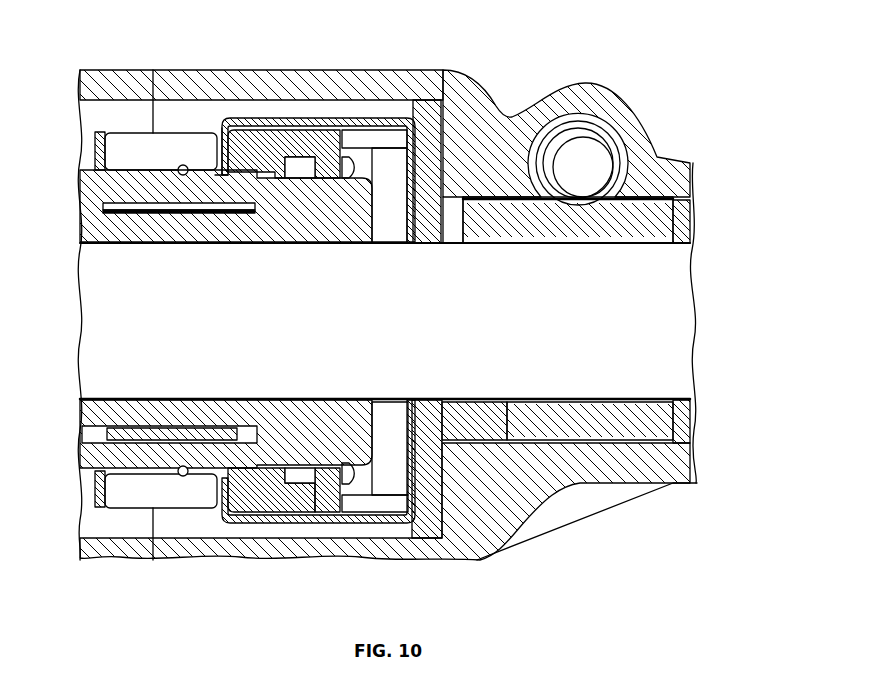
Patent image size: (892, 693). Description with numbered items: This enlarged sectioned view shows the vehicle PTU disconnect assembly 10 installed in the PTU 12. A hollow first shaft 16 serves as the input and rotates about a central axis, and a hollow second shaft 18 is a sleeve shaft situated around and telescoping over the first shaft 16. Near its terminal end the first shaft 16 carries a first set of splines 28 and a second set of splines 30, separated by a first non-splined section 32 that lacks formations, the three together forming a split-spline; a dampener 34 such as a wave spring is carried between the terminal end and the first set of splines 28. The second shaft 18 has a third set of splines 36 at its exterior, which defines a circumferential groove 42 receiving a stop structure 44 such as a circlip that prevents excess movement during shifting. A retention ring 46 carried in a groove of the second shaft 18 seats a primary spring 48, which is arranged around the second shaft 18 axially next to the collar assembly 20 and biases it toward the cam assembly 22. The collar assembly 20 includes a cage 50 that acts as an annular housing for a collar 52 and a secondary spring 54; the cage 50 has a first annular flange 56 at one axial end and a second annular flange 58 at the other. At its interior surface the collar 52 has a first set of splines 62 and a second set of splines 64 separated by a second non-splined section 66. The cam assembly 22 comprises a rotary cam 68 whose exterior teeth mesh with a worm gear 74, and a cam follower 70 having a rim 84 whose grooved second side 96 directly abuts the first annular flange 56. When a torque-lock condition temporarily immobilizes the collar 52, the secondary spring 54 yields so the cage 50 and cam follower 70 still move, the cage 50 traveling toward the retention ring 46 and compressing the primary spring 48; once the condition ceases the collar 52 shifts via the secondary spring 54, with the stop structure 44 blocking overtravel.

The vehicle PTU disconnect assembly 10 is at (275, 557).
The PTU 12 is at (672, 136).
The first shaft 16 is at (155, 403).
The second shaft 18 is at (98, 437).
The collar assembly 20 is at (293, 117).
The cam assembly 22 is at (473, 193).
The first set of splines 28 is at (330, 477).
The second set of splines 30 is at (265, 466).
The first non-splined section 32 is at (298, 467).
The dampener 34 is at (352, 462).
The third set of splines 36 is at (180, 213).
The circumferential groove 42 is at (198, 445).
The stop structure 44 is at (183, 177).
The retention ring 46 is at (98, 155).
The primary spring 48 is at (135, 150).
The cage 50 is at (348, 123).
The collar 52 is at (257, 157).
The secondary spring 54 is at (385, 137).
The first annular flange 56 is at (427, 140).
The second annular flange 58 is at (221, 152).
The first set of splines of the collar 62 is at (345, 172).
The second set of splines of the collar 64 is at (258, 185).
The second non-splined section 66 is at (298, 162).
The rotary cam 68 is at (540, 430).
The cam follower 70 is at (440, 427).
The worm gear 74 is at (587, 157).
The rim 84 is at (423, 180).
The second side 96 is at (404, 505).